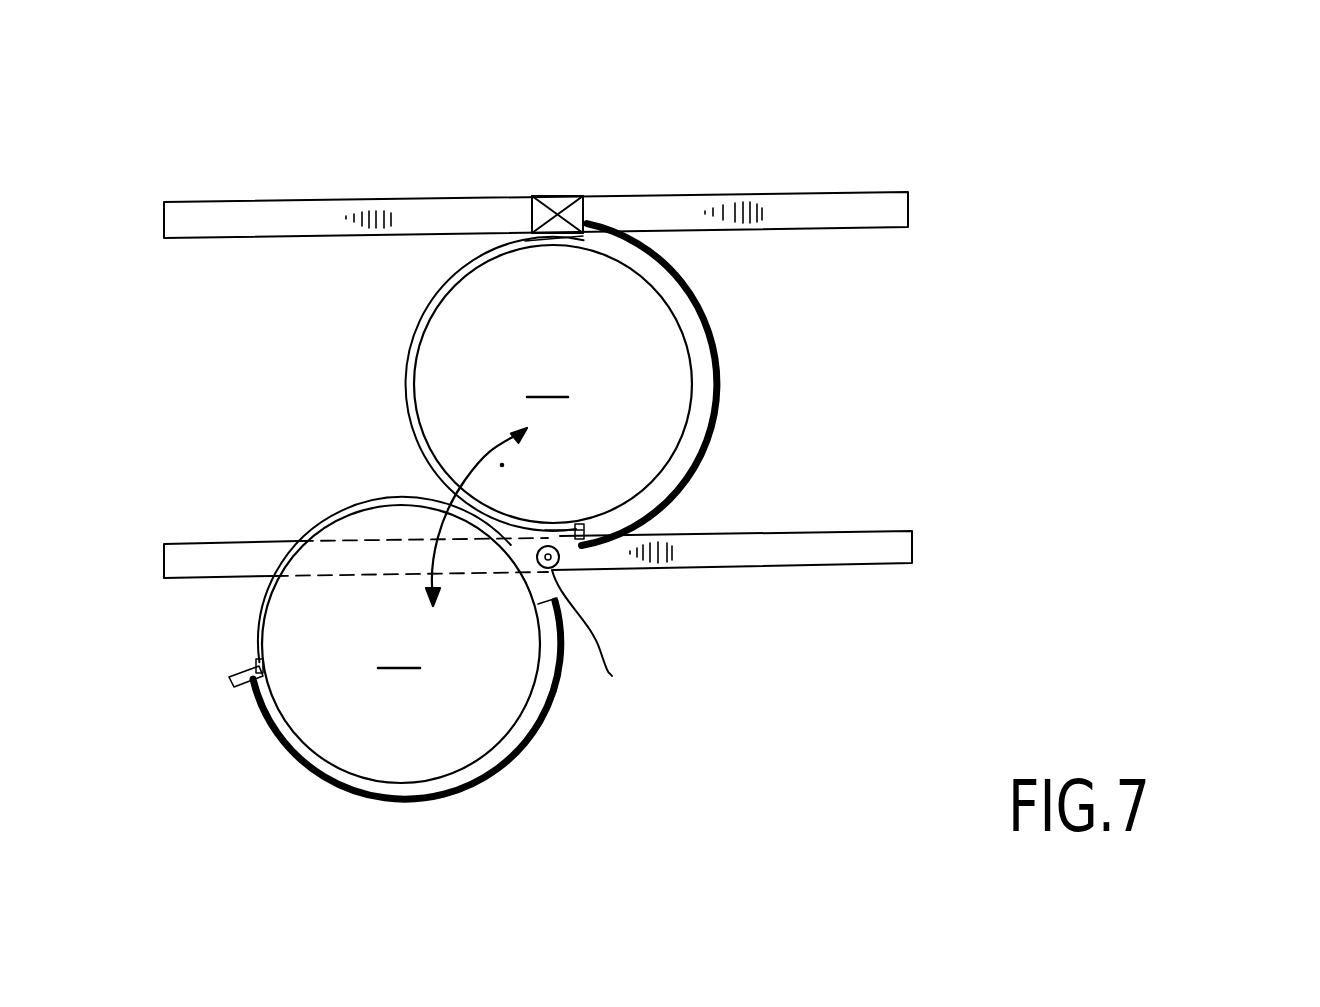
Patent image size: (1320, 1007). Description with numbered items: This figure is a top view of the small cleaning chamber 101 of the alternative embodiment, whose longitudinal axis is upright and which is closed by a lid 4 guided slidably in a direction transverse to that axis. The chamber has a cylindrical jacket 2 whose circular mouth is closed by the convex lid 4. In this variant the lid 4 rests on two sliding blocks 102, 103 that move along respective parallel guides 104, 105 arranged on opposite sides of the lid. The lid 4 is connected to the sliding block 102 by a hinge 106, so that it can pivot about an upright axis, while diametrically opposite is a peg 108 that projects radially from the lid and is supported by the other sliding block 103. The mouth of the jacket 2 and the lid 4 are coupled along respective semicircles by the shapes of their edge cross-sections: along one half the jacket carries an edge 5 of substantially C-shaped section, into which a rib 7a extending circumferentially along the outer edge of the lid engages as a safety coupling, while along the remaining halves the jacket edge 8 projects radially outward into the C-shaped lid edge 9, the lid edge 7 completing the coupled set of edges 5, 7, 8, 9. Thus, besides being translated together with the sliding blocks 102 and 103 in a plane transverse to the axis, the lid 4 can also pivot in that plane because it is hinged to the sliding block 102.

The cylindrical jacket 2 is at (553, 384).
The lid 4 is at (401, 644).
The edge 5 is at (710, 380).
The edge 7 is at (323, 515).
The rib 7a is at (258, 632).
The edge 8 is at (412, 347).
The edge 9 is at (470, 778).
The cleaning chamber 101 is at (1060, 226).
The sliding block 102 is at (578, 552).
The sliding block 103 is at (553, 200).
The guide 104 is at (840, 553).
The guide 105 is at (848, 208).
The hinge 106 is at (607, 655).
The peg 108 is at (233, 682).